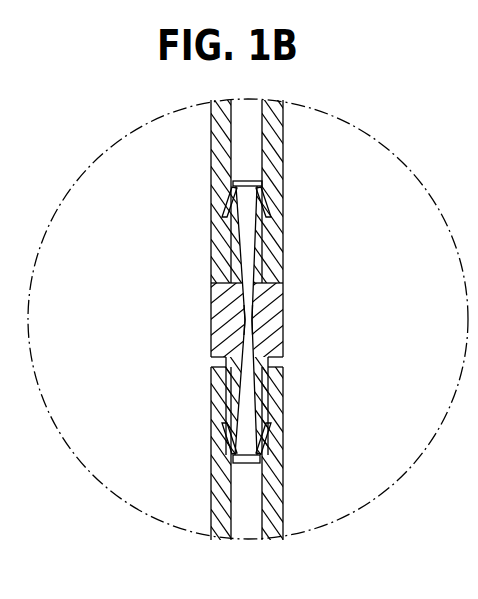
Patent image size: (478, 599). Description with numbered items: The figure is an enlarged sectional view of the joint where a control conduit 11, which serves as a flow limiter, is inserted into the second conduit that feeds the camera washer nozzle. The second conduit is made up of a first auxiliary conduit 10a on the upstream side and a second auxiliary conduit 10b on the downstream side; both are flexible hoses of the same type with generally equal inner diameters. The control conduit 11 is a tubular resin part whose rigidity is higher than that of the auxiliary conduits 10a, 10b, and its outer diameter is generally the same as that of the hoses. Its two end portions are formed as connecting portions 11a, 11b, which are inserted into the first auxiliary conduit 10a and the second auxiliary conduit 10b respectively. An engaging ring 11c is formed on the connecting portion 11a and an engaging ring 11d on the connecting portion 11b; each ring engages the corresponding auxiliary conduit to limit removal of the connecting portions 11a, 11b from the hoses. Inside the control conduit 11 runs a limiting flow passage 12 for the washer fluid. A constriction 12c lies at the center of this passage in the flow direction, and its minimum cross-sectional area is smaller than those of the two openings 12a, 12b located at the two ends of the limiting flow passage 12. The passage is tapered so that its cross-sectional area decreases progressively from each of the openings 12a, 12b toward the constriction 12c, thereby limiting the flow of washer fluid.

The first auxiliary conduit 10a is at (211, 150).
The second auxiliary conduit 10b is at (211, 488).
The control conduit 11 is at (212, 300).
The connecting portion 11a is at (272, 214).
The connecting portion 11b is at (271, 408).
The engaging ring 11c is at (222, 213).
The engaging ring 11d is at (224, 419).
The limiting flow passage 12 is at (243, 243).
The opening 12a is at (262, 183).
The opening 12b is at (259, 462).
The constriction 12c is at (253, 316).